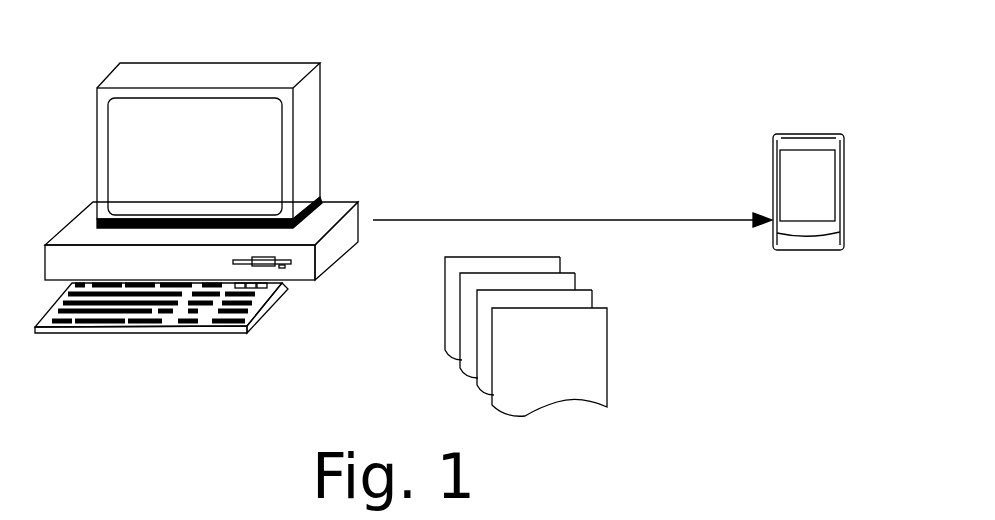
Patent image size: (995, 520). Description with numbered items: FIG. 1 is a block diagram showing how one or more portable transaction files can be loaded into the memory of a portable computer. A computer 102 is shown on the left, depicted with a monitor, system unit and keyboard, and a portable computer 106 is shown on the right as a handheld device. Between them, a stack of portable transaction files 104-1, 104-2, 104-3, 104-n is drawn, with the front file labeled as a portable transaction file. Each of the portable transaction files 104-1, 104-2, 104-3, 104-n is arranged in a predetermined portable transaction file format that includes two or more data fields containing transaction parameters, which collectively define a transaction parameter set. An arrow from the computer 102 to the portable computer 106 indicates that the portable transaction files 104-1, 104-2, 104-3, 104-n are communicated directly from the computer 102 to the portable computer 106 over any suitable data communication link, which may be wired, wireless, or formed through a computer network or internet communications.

The computer 102 is at (358, 202).
The portable transaction file 104-1 is at (563, 256).
The portable transaction file 104-2 is at (575, 282).
The portable transaction file 104-3 is at (592, 303).
The portable transaction file 104-n is at (607, 325).
The portable computer 106 is at (845, 150).